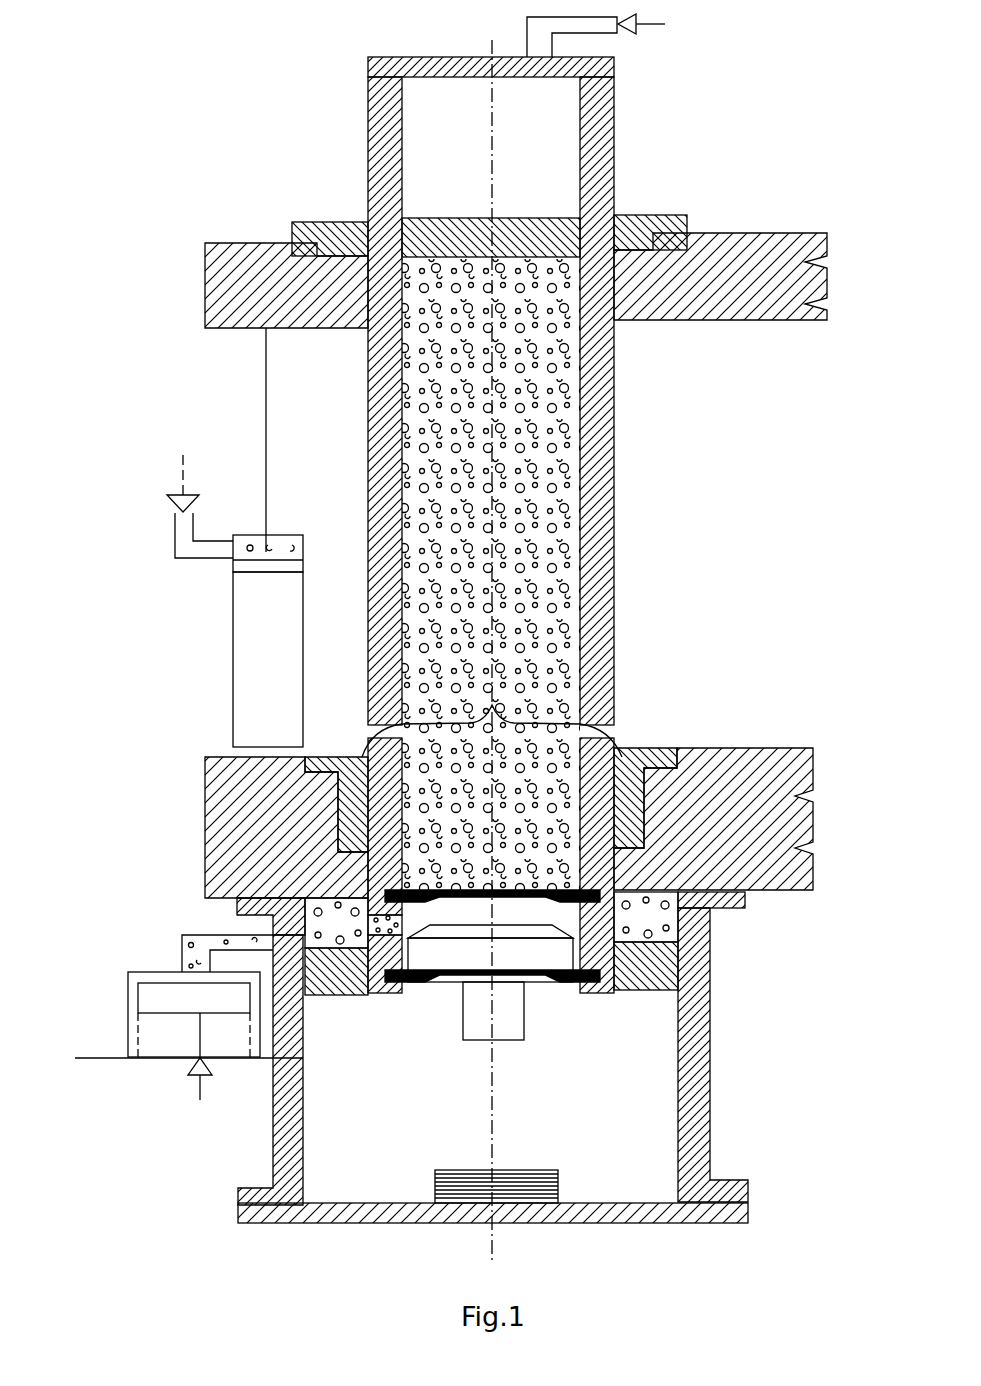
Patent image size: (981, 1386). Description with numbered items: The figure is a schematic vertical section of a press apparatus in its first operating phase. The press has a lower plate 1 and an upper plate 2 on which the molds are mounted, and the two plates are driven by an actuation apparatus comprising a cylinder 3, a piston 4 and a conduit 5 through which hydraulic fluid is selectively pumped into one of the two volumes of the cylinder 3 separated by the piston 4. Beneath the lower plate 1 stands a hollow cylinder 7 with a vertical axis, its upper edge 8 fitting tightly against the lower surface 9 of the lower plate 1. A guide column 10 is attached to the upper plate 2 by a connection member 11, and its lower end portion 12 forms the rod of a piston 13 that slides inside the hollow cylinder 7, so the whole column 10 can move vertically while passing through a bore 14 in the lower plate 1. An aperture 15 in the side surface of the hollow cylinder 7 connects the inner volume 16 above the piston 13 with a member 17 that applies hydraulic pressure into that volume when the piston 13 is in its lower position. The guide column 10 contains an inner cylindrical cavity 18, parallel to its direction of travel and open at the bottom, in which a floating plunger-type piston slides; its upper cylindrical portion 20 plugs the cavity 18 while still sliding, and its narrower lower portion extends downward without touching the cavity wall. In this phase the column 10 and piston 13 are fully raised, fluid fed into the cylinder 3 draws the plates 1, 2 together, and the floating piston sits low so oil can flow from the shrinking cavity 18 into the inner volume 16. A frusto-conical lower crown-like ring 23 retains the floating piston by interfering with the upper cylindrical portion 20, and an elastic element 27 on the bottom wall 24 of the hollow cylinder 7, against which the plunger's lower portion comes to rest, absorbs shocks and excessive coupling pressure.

The lower plate 1 is at (742, 748).
The upper plate 2 is at (780, 322).
The cylinder 3 is at (243, 685).
The piston 4 is at (240, 566).
The conduit 5 is at (183, 455).
The hollow cylinder 7 is at (278, 1150).
The upper edge 8 is at (710, 1012).
The lower surface 9 is at (740, 908).
The guide column 10 is at (614, 420).
The connection member 11 is at (655, 214).
The lower end portion 12 is at (392, 995).
The piston 13 is at (648, 992).
The bore 14 is at (492, 718).
The aperture 15 is at (185, 960).
The inner volume 16 is at (318, 922).
The member 17 is at (150, 1010).
The inner cylindrical cavity 18 is at (545, 530).
The upper cylindrical portion 20 is at (470, 958).
The lower crown-like ring 23 is at (586, 992).
The bottom wall 24 is at (660, 1222).
The elastic element 27 is at (435, 1190).